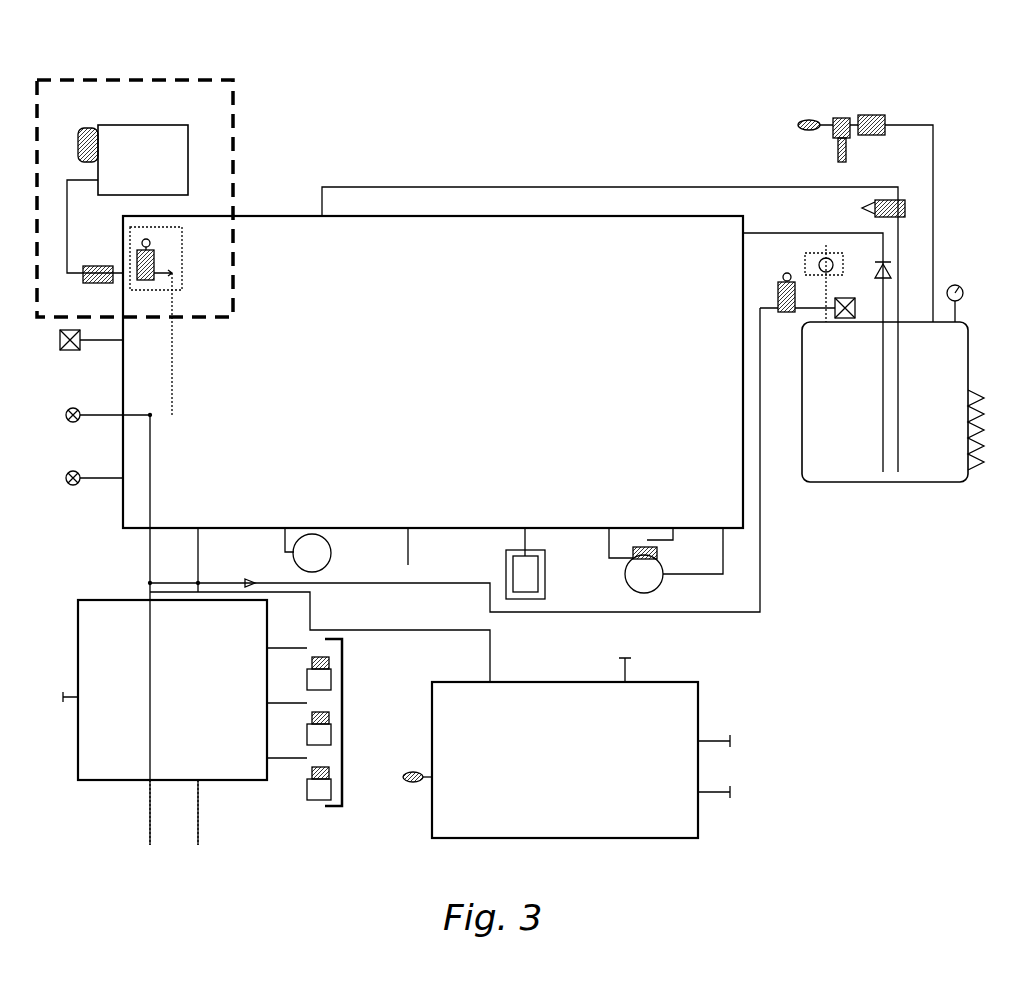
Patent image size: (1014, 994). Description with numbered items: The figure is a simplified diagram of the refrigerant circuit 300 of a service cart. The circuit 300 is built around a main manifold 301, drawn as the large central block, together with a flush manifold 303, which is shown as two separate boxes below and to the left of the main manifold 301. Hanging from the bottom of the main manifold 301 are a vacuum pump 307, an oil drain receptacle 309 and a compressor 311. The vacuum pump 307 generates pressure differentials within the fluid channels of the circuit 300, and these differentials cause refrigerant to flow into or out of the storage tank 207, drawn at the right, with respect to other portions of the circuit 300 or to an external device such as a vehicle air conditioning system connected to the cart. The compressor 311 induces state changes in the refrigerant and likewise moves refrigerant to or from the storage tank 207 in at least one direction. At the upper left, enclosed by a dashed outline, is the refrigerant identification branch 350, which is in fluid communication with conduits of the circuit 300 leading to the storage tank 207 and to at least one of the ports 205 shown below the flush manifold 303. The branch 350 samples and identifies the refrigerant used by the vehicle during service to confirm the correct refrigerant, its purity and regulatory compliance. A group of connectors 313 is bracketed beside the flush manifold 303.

The refrigerant circuit 300 is at (515, 108).
The refrigerant identification (RID) branch 350 is at (246, 121).
The main manifold 301 is at (533, 294).
The storage tank 207 is at (822, 394).
The vacuum pump 307 is at (312, 535).
The oil drain receptacle 309 is at (522, 599).
The compressor 311 is at (648, 592).
The flush manifold 303 is at (174, 699).
The ports 205 is at (147, 843).
The connectors 313 is at (342, 722).